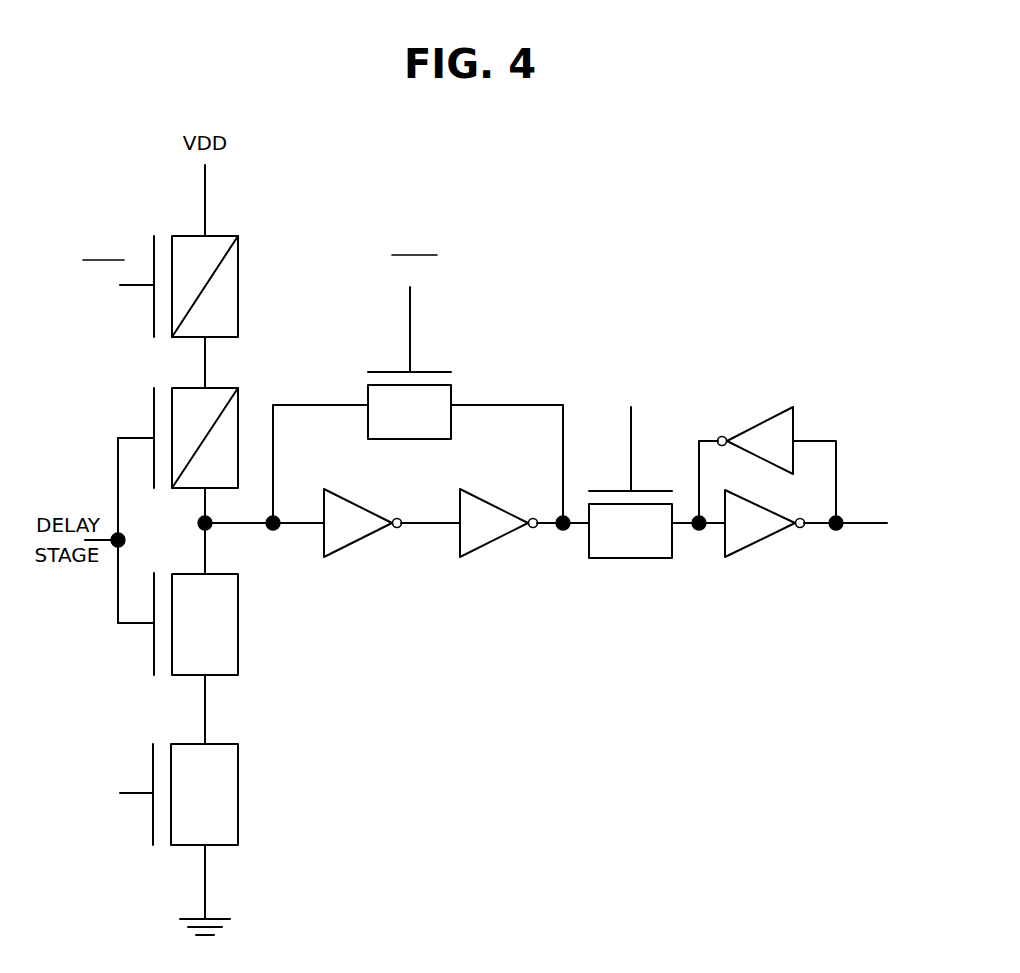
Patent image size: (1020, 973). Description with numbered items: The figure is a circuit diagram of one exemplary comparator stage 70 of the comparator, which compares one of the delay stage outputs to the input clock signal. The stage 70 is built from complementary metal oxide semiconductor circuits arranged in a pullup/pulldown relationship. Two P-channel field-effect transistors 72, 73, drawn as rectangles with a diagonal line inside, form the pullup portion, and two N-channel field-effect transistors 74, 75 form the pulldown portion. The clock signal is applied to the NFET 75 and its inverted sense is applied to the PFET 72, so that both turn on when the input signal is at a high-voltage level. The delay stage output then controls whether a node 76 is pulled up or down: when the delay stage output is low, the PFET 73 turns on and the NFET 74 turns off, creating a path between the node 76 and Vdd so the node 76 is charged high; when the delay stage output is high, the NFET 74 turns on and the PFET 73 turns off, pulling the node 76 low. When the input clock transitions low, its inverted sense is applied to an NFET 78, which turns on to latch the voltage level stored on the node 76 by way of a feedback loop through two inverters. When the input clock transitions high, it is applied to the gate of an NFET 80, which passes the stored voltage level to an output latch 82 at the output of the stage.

The comparator stage 70 is at (561, 403).
The P-channel field-effect transistor 72 is at (238, 251).
The P-channel field-effect transistor 73 is at (189, 386).
The N-channel field-effect transistor 74 is at (238, 607).
The N-channel field-effect transistor 75 is at (238, 778).
The node 76 is at (208, 528).
The N-channel field-effect transistor 78 is at (451, 387).
The N-channel field-effect transistor 80 is at (618, 558).
The output latch 82 is at (750, 395).